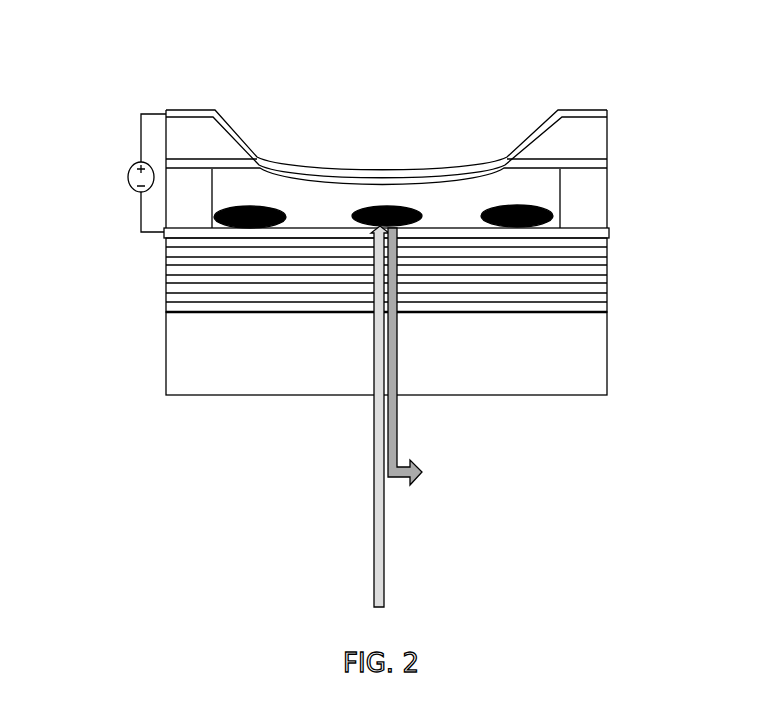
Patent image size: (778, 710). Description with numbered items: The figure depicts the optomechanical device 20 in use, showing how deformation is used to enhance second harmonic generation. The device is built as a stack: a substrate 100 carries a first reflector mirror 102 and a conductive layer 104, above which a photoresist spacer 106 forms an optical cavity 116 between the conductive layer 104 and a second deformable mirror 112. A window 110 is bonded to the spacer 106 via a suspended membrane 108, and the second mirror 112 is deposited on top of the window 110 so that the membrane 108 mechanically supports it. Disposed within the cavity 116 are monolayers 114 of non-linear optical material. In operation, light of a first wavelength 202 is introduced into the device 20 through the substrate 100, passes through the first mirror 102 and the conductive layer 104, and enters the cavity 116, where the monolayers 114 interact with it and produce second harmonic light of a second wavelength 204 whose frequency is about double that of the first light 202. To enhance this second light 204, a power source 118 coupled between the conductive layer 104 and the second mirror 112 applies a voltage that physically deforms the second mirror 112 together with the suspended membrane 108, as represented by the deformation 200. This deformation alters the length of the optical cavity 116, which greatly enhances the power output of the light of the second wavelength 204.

The optomechanical device 20 is at (85, 77).
The substrate 100 is at (165, 368).
The first reflector mirror 102 is at (165, 285).
The conductive layer 104 is at (609, 231).
The photoresist spacer 106 is at (607, 199).
The suspended membrane 108 is at (607, 163).
The window 110 is at (607, 130).
The second deformable mirror 112 is at (607, 110).
The monolayer of non-linear optical material 114 is at (248, 205).
The optical cavity 116 is at (448, 198).
The power source 118 is at (123, 175).
The deformation 200 is at (398, 167).
The light of a first wavelength 202 is at (372, 453).
The light of a second wavelength 204 is at (398, 416).